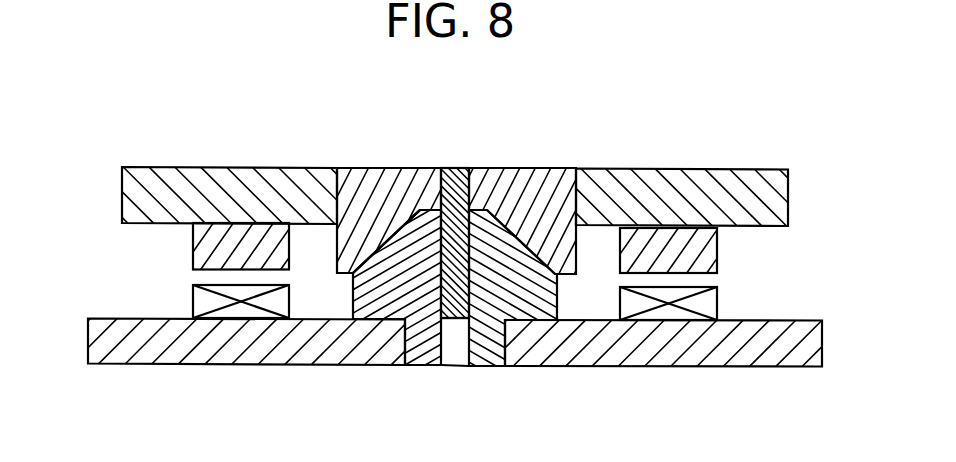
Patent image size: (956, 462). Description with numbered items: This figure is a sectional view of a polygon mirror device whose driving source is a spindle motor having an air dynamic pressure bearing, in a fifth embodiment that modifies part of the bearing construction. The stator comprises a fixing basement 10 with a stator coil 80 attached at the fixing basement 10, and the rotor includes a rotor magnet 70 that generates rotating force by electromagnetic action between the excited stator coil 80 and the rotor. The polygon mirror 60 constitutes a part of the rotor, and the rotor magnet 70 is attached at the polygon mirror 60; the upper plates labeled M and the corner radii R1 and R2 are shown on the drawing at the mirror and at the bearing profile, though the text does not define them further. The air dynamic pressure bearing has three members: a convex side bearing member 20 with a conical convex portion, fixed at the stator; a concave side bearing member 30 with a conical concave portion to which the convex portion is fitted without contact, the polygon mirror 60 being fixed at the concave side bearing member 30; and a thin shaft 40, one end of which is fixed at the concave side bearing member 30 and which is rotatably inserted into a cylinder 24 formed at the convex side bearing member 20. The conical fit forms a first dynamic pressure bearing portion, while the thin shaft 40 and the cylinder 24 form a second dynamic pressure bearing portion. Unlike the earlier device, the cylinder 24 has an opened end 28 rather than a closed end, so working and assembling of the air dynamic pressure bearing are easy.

The mold M is at (122, 200).
The first corner radius R1 is at (388, 238).
The second corner radius R2 is at (421, 209).
The fixing basement 10 is at (147, 357).
The convex side bearing member 20 is at (413, 368).
The cylinder 24 is at (483, 283).
The opened end 28 is at (468, 343).
The concave side bearing member 30 is at (513, 177).
The thin shaft 40 is at (452, 172).
The polygon mirror 60 is at (695, 180).
The rotor magnet 70 is at (707, 250).
The stator coil 80 is at (707, 305).